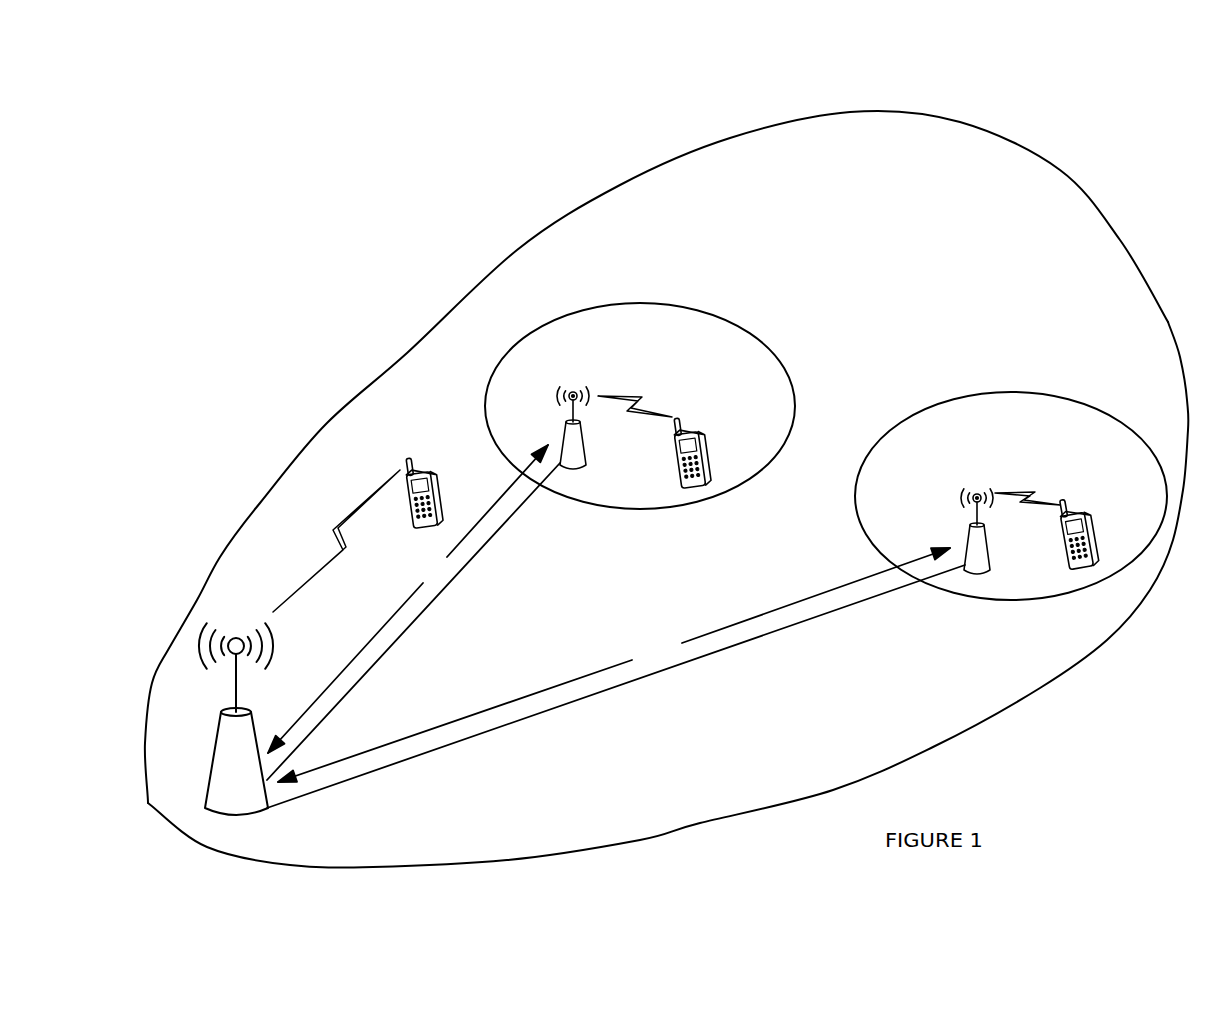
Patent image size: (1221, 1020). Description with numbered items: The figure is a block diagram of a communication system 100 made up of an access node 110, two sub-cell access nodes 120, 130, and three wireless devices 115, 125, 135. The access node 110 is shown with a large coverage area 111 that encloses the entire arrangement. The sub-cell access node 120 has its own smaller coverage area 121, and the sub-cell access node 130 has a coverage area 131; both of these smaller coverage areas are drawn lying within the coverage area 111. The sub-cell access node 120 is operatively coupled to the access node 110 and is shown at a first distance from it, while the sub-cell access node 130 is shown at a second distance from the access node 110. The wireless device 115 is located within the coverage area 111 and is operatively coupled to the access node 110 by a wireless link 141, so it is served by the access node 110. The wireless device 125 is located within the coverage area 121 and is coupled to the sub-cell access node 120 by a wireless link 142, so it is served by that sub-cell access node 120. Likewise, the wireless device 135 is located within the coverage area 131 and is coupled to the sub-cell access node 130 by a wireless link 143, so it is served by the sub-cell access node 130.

The communication system 100 is at (196, 92).
The access node 110 is at (247, 812).
The coverage area 111 is at (924, 214).
The wireless device 115 is at (433, 473).
The sub-cell access node 120 is at (987, 570).
The coverage area 121 is at (955, 586).
The wireless device 125 is at (1078, 516).
The sub-cell access node 130 is at (575, 468).
The coverage area 131 is at (655, 511).
The wireless device 135 is at (698, 430).
The wireless link 141 is at (362, 515).
The wireless link 142 is at (1026, 492).
The wireless link 143 is at (638, 398).